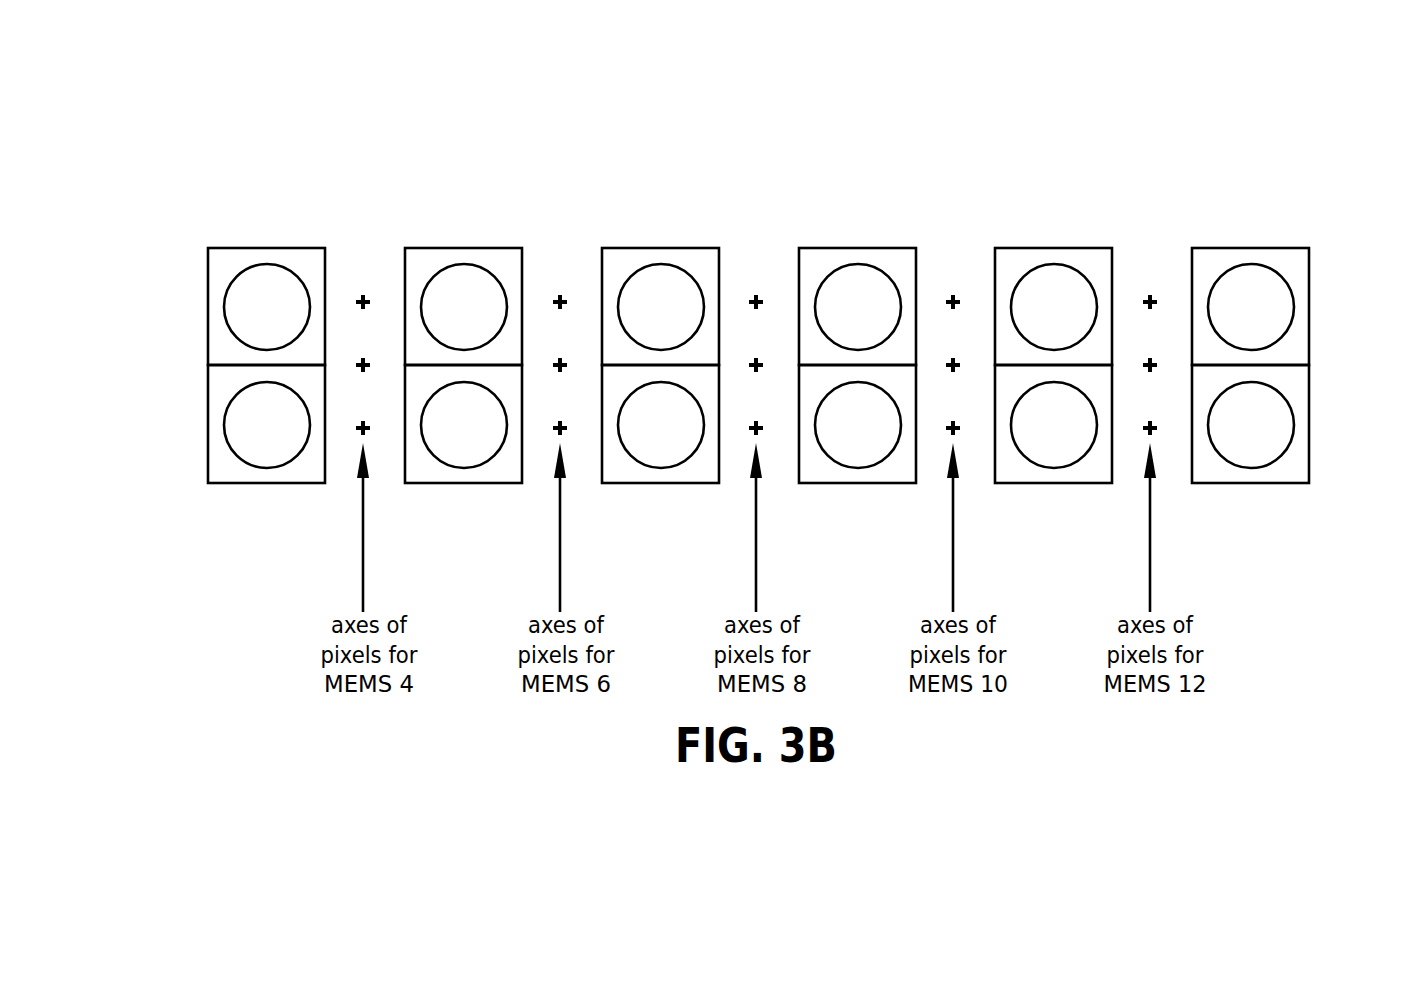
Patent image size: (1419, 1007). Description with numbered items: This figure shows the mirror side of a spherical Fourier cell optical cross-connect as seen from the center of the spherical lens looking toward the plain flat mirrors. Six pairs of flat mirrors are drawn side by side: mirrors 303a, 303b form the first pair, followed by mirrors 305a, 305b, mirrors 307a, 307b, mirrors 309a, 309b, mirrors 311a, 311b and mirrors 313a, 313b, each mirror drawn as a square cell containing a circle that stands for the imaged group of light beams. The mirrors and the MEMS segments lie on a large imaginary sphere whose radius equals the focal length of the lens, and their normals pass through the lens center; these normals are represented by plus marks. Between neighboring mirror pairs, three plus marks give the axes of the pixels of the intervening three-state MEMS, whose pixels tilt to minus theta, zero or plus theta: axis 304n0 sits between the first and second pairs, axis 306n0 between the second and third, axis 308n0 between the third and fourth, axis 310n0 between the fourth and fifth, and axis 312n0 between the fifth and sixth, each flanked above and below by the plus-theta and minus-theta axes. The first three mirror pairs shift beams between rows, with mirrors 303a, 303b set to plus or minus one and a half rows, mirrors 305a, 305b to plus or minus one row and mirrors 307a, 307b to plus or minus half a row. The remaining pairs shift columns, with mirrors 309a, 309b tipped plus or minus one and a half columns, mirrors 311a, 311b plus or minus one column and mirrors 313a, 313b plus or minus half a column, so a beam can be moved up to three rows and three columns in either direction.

The mirror 303a is at (208, 292).
The mirror 303b is at (208, 414).
The MEMS pixel normal at zero tilt 304n0 is at (356, 362).
The mirror 305a is at (463, 248).
The mirror 305b is at (490, 483).
The MEMS pixel normal at zero tilt 306n0 is at (553, 362).
The mirror 307a is at (660, 248).
The mirror 307b is at (687, 483).
The MEMS pixel normal at zero tilt 308n0 is at (749, 362).
The mirror 309a is at (856, 248).
The mirror 309b is at (884, 483).
The MEMS pixel normal at zero tilt 310n0 is at (946, 362).
The mirror 311a is at (1053, 248).
The mirror 311b is at (1080, 483).
The MEMS pixel normal at zero tilt 312n0 is at (1143, 362).
The mirror 313a is at (1267, 248).
The mirror 313b is at (1290, 483).